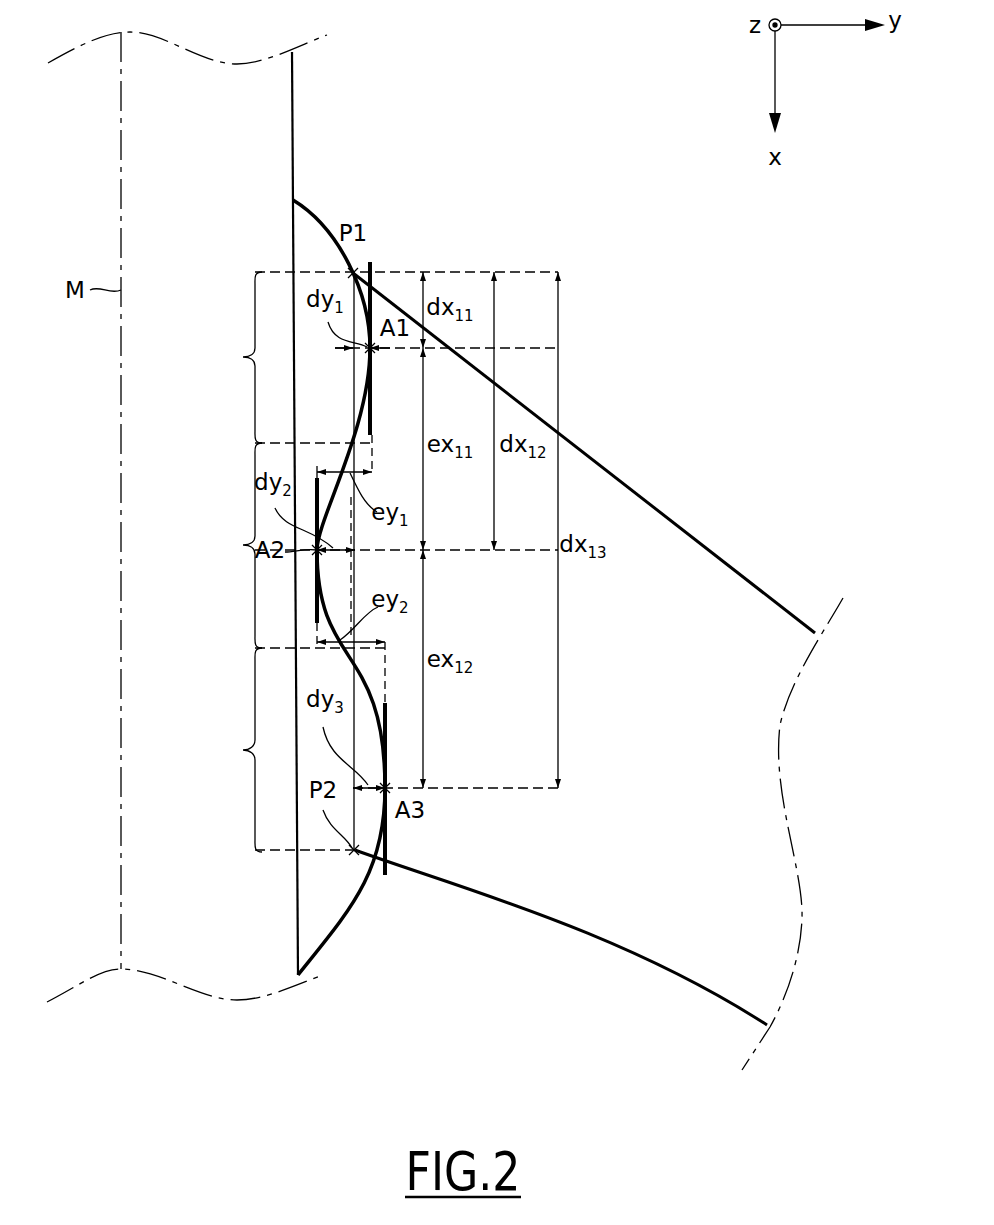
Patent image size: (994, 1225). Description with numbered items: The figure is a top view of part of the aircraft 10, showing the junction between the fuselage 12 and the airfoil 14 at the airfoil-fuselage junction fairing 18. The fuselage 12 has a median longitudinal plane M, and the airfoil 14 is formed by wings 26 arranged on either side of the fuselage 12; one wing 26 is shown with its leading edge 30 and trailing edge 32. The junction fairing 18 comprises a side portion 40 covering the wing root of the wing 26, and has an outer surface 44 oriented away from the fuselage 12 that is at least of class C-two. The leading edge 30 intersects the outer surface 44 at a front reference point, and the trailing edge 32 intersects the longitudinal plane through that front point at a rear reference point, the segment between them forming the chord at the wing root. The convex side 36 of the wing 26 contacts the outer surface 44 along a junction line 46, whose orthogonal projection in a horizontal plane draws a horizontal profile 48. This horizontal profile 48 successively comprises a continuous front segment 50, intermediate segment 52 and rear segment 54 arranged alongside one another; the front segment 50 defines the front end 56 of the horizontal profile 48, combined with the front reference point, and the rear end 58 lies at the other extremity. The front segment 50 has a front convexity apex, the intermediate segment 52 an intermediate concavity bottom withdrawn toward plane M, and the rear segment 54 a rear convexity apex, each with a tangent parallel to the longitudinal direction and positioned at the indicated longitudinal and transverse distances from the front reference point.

The aircraft 10 is at (510, 1047).
The fuselage 12 is at (188, 955).
The airfoil 14 is at (680, 948).
The airfoil-fuselage junction fairing 18 is at (340, 913).
The wing 26 is at (740, 617).
The leading edge 30 is at (670, 515).
The trailing edge 32 is at (527, 910).
The convex side 36 is at (682, 710).
The side portion 40 is at (305, 930).
The outer surface 44 is at (316, 240).
The junction line 46 is at (312, 615).
The horizontal profile 48 is at (338, 406).
The front segment 50 is at (235, 357).
The intermediate segment 52 is at (235, 545).
The rear segment 54 is at (234, 750).
The front end 56 is at (372, 265).
The rear end 58 is at (387, 873).